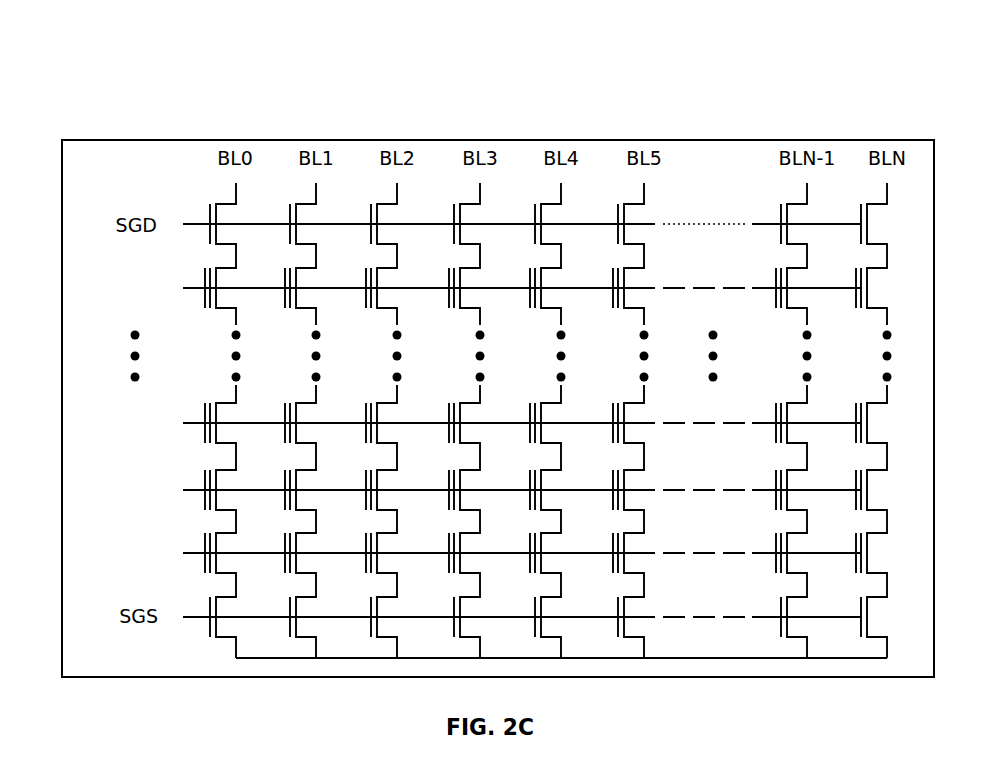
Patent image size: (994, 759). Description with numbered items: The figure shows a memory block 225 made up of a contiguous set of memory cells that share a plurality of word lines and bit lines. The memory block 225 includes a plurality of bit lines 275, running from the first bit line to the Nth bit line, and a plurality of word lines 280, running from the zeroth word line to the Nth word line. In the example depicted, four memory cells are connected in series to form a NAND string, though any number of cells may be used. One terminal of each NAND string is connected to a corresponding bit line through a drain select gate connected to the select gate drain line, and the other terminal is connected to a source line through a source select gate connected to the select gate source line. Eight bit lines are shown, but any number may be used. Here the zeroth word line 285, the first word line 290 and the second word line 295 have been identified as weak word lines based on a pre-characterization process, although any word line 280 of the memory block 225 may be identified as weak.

The memory block 225 is at (89, 139).
The bit lines 275 is at (885, 141).
The word lines 280 is at (105, 292).
The word line 2 (WL2) 295 is at (105, 430).
The word line 1 (WL1) 290 is at (105, 490).
The word line 0 (WL0) 285 is at (105, 556).